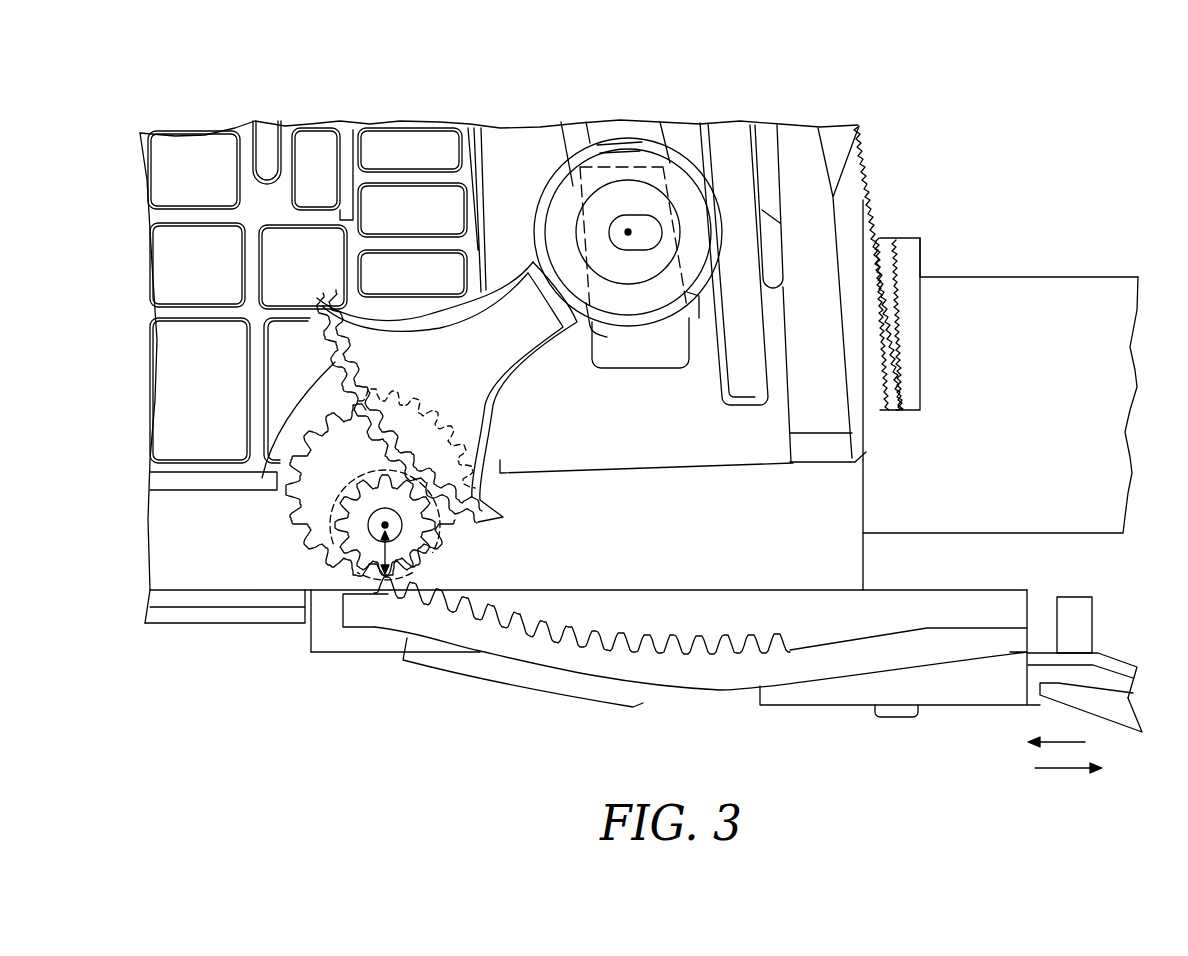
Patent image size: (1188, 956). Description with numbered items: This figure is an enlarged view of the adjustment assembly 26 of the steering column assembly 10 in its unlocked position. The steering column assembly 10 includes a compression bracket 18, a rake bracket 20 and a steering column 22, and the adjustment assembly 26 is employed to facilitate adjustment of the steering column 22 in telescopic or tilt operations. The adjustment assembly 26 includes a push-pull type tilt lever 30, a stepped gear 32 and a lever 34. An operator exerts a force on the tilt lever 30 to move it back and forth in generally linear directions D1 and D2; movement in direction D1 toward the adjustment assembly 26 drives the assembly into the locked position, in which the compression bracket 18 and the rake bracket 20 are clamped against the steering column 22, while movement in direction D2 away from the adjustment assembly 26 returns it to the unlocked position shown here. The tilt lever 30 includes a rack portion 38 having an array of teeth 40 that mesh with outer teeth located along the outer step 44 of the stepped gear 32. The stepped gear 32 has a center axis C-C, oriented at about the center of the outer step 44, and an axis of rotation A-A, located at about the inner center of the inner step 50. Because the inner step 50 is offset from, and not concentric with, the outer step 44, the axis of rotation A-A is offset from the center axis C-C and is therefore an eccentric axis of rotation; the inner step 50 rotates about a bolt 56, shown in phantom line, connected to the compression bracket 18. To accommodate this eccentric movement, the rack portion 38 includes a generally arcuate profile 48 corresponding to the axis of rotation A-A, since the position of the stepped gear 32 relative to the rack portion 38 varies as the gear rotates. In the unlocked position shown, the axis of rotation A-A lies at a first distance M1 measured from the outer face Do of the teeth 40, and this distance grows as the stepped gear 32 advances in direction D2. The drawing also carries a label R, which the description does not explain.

The steering column assembly 10 is at (1084, 198).
The compression bracket 18 is at (845, 550).
The rake bracket 20 is at (805, 155).
The steering column 22 is at (991, 287).
The adjustment assembly 26 is at (888, 201).
The push-pull type tilt lever 30 is at (1110, 677).
The stepped gear 32 is at (478, 548).
The lever 34 is at (470, 371).
The rack portion 38 is at (668, 684).
The teeth 40 is at (633, 627).
The outer step 44 is at (278, 458).
The arcuate profile 48 is at (542, 693).
The inner step 50 is at (374, 598).
The bolt 56 is at (290, 495).
The rotation axis R is at (630, 230).
The outer face Do is at (545, 630).
The first distance M1 is at (425, 571).
The center axis C-C is at (385, 492).
The axis of rotation A-A is at (382, 528).
The direction D1 is at (1052, 770).
The direction D2 is at (1074, 742).